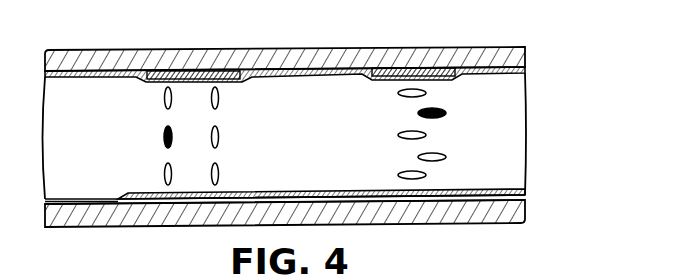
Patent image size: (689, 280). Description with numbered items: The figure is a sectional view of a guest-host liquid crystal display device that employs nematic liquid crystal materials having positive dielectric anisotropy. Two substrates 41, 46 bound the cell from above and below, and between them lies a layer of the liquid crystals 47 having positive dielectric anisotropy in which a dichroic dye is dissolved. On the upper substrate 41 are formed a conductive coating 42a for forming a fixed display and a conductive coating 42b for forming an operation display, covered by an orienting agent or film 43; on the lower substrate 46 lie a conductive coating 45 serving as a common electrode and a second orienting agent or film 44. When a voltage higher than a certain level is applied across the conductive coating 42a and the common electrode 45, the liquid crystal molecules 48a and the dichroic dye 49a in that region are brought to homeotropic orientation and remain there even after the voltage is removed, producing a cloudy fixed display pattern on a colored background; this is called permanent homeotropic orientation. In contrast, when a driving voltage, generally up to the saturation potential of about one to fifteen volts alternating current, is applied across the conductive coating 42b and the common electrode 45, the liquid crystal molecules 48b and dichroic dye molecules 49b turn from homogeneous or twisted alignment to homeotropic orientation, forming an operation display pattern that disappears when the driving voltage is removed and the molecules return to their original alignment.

The substrate 41 is at (525, 53).
The conductive coating for forming fixed display 42a is at (192, 71).
The conductive coating for forming operation display 42b is at (412, 68).
The orienting agent or film 43 is at (523, 70).
The orienting agent or film 44 is at (525, 192).
The conductive coating serving as a common electrode 45 is at (525, 197).
The substrate 46 is at (527, 217).
The layer of liquid crystals 47 is at (519, 125).
The liquid crystal molecules in permanent homeotropic orientation 48a is at (164, 100).
The liquid crystal molecules 48b is at (398, 94).
The dichroic dye 49a is at (164, 140).
The dichroic dye molecules 49b is at (446, 112).